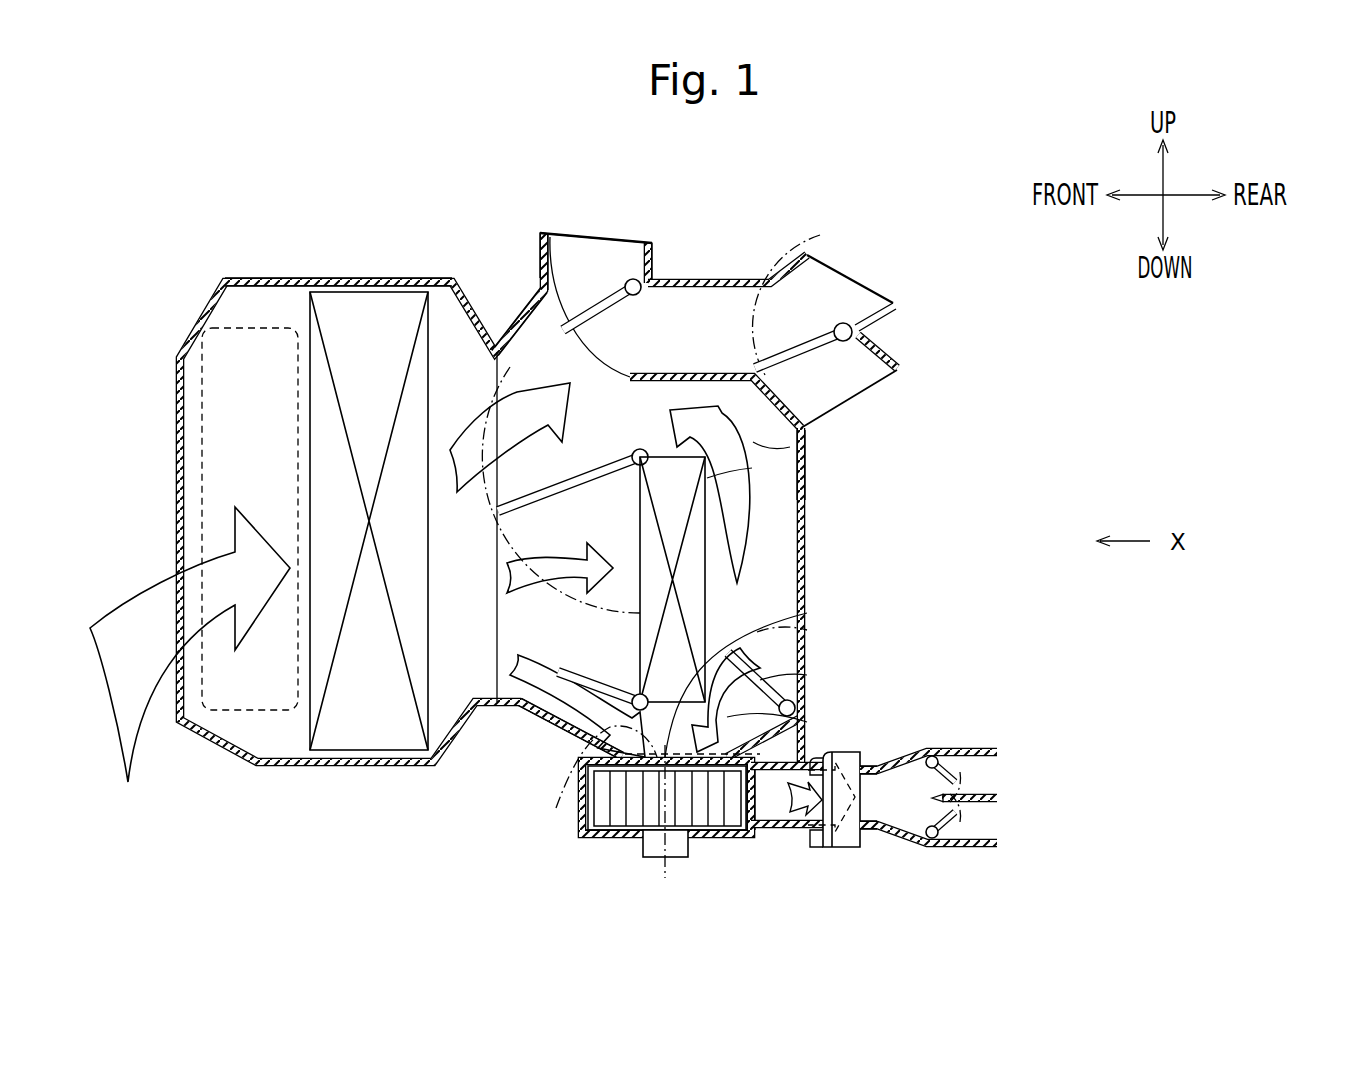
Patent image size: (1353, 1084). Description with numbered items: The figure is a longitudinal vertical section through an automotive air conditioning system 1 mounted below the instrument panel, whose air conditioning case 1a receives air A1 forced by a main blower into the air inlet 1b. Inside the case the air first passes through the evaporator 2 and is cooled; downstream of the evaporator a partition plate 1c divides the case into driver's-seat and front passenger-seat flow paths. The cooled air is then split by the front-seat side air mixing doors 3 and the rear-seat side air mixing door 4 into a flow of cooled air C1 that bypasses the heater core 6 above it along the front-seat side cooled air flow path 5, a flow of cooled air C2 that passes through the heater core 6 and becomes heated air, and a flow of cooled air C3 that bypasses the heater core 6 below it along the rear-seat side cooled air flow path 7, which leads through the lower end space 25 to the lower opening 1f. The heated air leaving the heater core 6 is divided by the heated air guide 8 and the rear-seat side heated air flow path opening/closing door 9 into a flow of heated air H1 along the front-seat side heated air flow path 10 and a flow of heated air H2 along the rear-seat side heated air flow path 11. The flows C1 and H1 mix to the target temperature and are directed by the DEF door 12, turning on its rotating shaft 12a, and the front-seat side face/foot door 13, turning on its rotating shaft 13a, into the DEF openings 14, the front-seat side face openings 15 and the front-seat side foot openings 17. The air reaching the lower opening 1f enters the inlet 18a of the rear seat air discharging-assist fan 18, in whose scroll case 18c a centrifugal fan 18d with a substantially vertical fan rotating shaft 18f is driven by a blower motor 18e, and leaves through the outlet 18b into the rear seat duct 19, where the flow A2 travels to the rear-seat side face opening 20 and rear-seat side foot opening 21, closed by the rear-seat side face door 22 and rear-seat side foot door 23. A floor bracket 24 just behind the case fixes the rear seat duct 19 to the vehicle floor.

The automotive air conditioning system 1 is at (359, 255).
The air conditioning case 1a is at (270, 281).
The air inlet 1b is at (223, 372).
The partition plate 1c is at (497, 690).
The lower opening 1f is at (651, 775).
The evaporator 2 is at (347, 730).
The front-seat side air mixing door 3 is at (557, 490).
The rear-seat side air mixing door 4 is at (548, 712).
The front-seat side cooled air flow path 5 is at (538, 377).
The heater core 6 is at (697, 600).
The rear-seat side cooled air flow path 7 is at (583, 688).
The heated air guide 8 is at (804, 428).
The rear-seat side heated air flow path opening/closing door 9 is at (757, 662).
The front-seat side heated air flow path 10 is at (806, 468).
The rear-seat side heated air flow path 11 is at (815, 745).
The DEF door 12 is at (555, 234).
The rotating shaft 12a is at (641, 282).
The front-seat side face/foot door 13 is at (818, 343).
The rotating shaft 13a is at (855, 333).
The DEF openings 14 is at (632, 250).
The front-seat side face openings 15 is at (813, 265).
The front-seat side foot openings 17 is at (868, 372).
The rear seat air discharging-assist fan 18 is at (627, 838).
The inlet 18a is at (668, 740).
The outlet 18b is at (760, 810).
The scroll case 18c is at (632, 838).
The centrifugal fan 18d is at (613, 843).
The blower motor 18e is at (657, 852).
The fan rotating shaft 18f is at (670, 870).
The rear seat duct 19 is at (796, 828).
The rear-seat side face opening 20 is at (988, 770).
The rear-seat side foot opening 21 is at (993, 822).
The rear-seat side face door 22 is at (945, 755).
The rear-seat side foot door 23 is at (950, 848).
The floor bracket 24 is at (862, 752).
The lower end space 25 is at (760, 632).
The air A1 is at (142, 600).
The rear air flow A2 is at (826, 847).
The flow of cooled air C1 is at (473, 445).
The flow of cooled air C2 is at (510, 628).
The flow of cooled air C3 is at (499, 706).
The flow of heated air H1 is at (748, 508).
The flow of heated air H2 is at (806, 728).